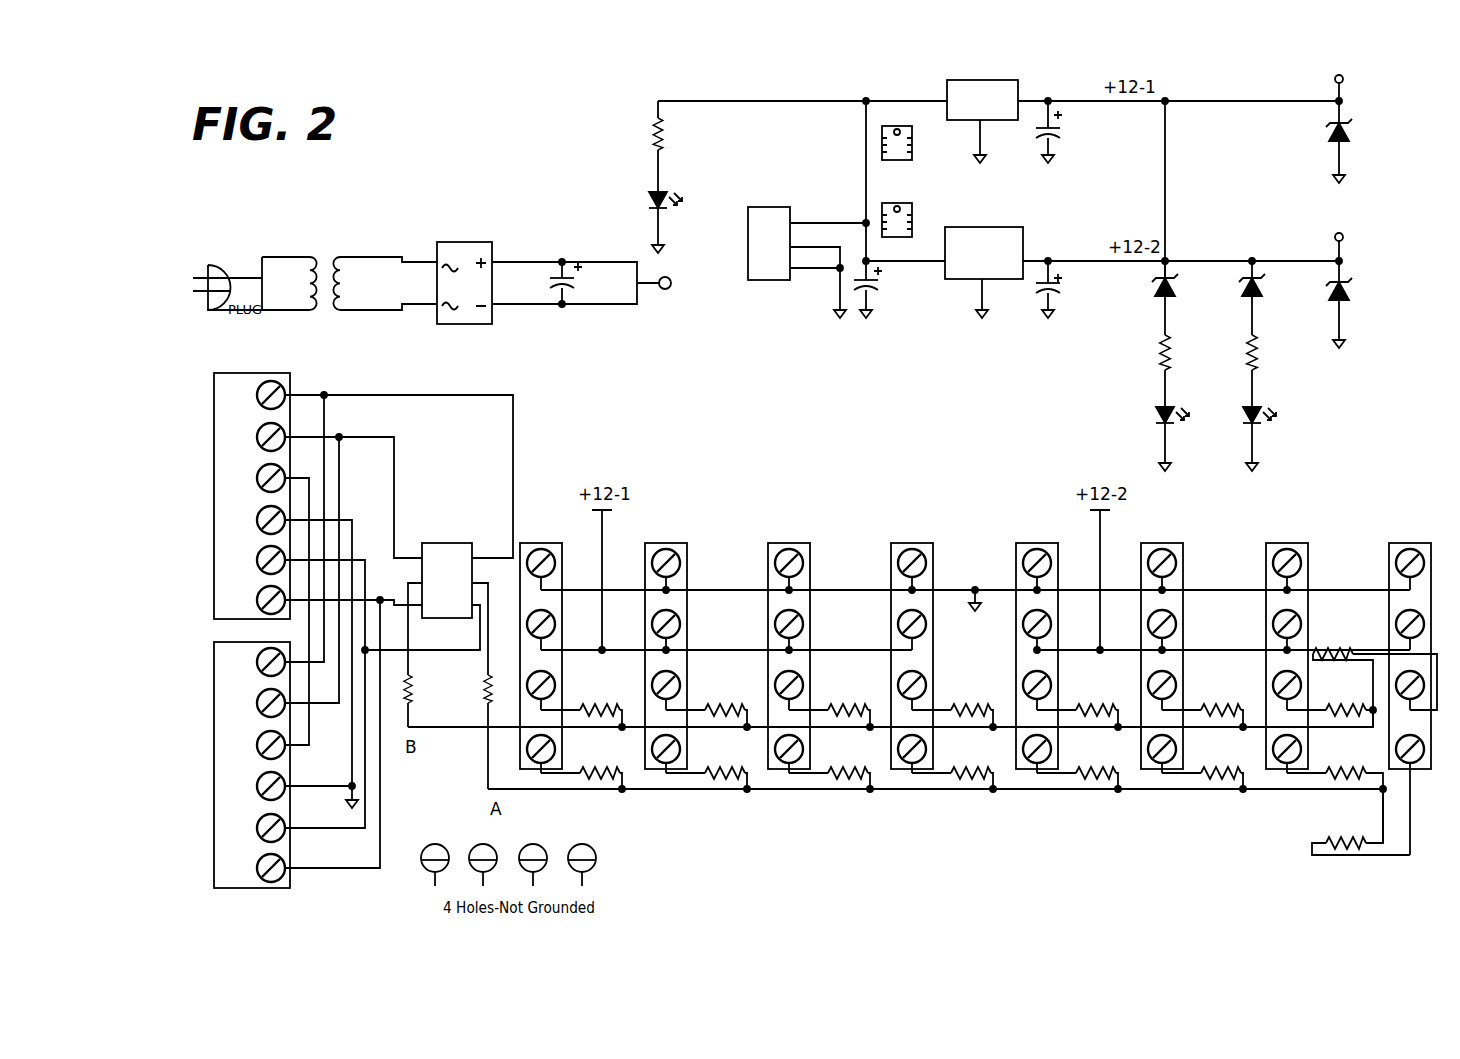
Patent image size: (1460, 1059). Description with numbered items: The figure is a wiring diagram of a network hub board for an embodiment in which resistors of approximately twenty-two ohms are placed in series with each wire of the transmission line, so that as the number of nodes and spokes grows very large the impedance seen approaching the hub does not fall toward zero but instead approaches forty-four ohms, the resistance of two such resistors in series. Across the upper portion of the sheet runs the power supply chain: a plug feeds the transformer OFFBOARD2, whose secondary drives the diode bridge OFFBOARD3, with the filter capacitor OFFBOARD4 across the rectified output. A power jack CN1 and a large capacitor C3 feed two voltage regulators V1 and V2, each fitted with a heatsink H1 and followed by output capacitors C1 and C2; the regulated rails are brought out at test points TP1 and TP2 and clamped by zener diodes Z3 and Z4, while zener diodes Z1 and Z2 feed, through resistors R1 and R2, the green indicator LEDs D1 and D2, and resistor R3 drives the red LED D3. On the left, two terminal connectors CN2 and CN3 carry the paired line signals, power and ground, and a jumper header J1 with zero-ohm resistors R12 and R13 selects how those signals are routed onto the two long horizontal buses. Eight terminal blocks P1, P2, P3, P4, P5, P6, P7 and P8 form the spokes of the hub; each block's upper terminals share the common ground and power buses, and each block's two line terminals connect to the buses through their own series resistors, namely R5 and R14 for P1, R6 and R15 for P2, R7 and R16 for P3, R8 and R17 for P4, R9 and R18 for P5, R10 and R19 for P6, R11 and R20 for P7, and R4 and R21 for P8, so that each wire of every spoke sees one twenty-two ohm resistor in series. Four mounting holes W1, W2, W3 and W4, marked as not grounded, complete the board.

The transformer 1 AMP 12v unregulated OFFBOARD2 is at (349, 267).
The diode bridge OFFBOARD3 is at (470, 284).
The filter capacitor OFFBOARD4 is at (564, 297).
The resistor 2.4K R3 is at (681, 146).
The red LED D3 is at (657, 210).
The power jack connector CN1 is at (802, 251).
The capacitor 100uF 35V C3 is at (896, 295).
The heatsink H1 is at (904, 177).
The 7812 voltage regulator V1 is at (1135, 105).
The 7812 voltage regulator V2 is at (1135, 258).
The capacitor 10uF 35V C1 is at (1075, 132).
The capacitor 10uF 35V C2 is at (1075, 291).
The test point TP1 is at (1358, 86).
The test point TP2 is at (1358, 245).
The zener diode 1N5235A Z1 is at (1167, 304).
The zener diode 1N5235A Z2 is at (1254, 304).
The zener diode 1N5353A Z3 is at (1339, 142).
The zener diode 1N5353A Z4 is at (1339, 304).
The resistor 620 R1 is at (1148, 369).
The resistor 620 R2 is at (1235, 369).
The green LED D1 is at (1165, 427).
The green LED D2 is at (1252, 427).
The Wago terminal connector CN2 is at (249, 482).
The Wago terminal connector CN3 is at (255, 779).
The jumper header PORT1/PORT2 J1 is at (426, 583).
The zero ohm resistor R12 is at (412, 698).
The zero ohm resistor R13 is at (489, 729).
The terminal block P1 is at (541, 645).
The terminal block P2 is at (666, 645).
The terminal block P3 is at (789, 645).
The terminal block P4 is at (912, 645).
The terminal block P5 is at (1037, 645).
The terminal block P6 is at (1162, 645).
The terminal block P7 is at (1287, 645).
The terminal block P8 is at (1410, 686).
The resistor 22 ohm R4 is at (1375, 664).
The resistor 22 ohm R5 is at (583, 698).
The resistor 22 ohm R6 is at (708, 698).
The resistor 22 ohm R7 is at (831, 698).
The resistor 22 ohm R8 is at (954, 698).
The resistor 22 ohm R9 is at (1079, 698).
The resistor 22 ohm R10 is at (1204, 698).
The resistor 22 ohm R11 is at (1331, 691).
The resistor 22 ohm R14 is at (583, 760).
The resistor 22 ohm R15 is at (708, 760).
The resistor 22 ohm R16 is at (831, 760).
The resistor 22 ohm R17 is at (954, 760).
The resistor 22 ohm R18 is at (1079, 760).
The resistor 22 ohm R19 is at (1204, 760).
The resistor 22 ohm R20 is at (1336, 761).
The resistor 22 ohm R21 is at (1361, 822).
The mounting hole not grounded W1 is at (445, 867).
The mounting hole not grounded W2 is at (493, 867).
The mounting hole not grounded W3 is at (542, 867).
The mounting hole not grounded W4 is at (591, 867).